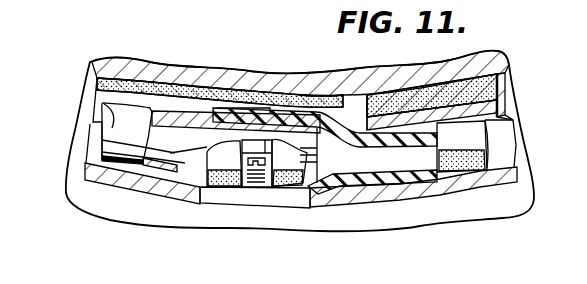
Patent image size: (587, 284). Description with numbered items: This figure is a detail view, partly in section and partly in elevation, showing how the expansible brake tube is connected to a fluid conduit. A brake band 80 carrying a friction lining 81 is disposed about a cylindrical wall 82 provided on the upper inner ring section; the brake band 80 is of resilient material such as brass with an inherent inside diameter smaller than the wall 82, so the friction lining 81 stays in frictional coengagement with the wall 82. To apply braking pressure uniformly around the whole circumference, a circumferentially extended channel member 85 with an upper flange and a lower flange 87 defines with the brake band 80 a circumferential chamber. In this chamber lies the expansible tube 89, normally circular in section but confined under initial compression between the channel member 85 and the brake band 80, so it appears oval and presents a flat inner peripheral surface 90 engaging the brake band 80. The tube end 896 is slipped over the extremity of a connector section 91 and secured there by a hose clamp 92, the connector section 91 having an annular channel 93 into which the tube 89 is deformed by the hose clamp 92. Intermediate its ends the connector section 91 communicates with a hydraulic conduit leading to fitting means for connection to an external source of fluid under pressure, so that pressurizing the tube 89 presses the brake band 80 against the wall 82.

The brake band 80 is at (470, 117).
The friction lining 81 is at (488, 95).
The cylindrical wall 82 is at (480, 77).
The channel member 85 is at (407, 190).
The lower flange 87 is at (95, 133).
The expansible tube 89 is at (480, 173).
The flat inner peripheral surface 90 is at (448, 117).
The connector section 91 is at (130, 108).
The hose clamp 92 is at (250, 187).
The annular channel 93 is at (256, 110).
The end of tube 896 is at (300, 112).